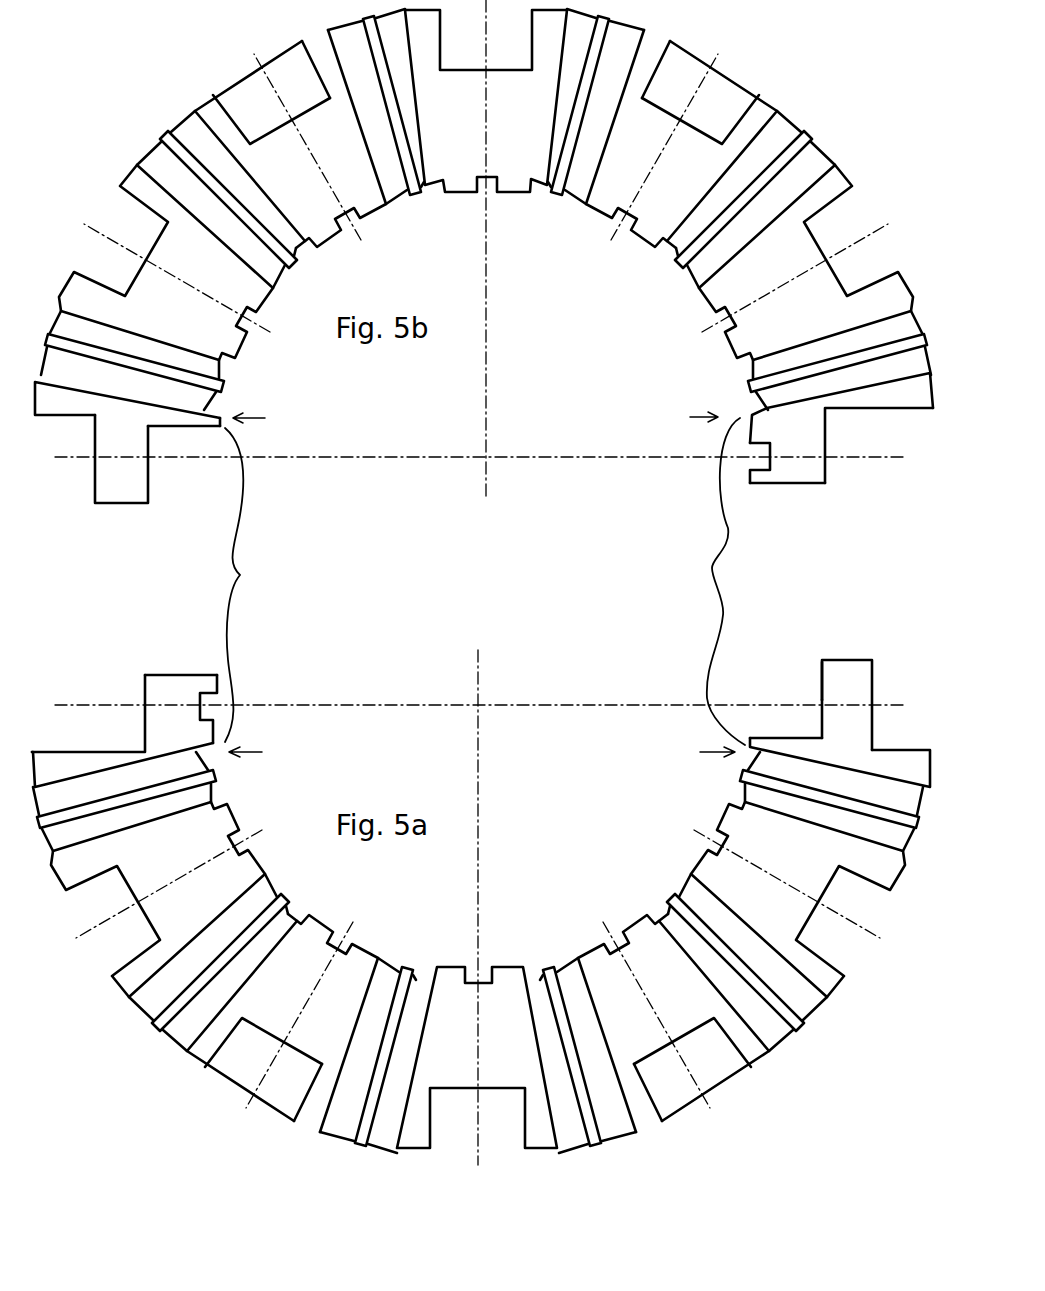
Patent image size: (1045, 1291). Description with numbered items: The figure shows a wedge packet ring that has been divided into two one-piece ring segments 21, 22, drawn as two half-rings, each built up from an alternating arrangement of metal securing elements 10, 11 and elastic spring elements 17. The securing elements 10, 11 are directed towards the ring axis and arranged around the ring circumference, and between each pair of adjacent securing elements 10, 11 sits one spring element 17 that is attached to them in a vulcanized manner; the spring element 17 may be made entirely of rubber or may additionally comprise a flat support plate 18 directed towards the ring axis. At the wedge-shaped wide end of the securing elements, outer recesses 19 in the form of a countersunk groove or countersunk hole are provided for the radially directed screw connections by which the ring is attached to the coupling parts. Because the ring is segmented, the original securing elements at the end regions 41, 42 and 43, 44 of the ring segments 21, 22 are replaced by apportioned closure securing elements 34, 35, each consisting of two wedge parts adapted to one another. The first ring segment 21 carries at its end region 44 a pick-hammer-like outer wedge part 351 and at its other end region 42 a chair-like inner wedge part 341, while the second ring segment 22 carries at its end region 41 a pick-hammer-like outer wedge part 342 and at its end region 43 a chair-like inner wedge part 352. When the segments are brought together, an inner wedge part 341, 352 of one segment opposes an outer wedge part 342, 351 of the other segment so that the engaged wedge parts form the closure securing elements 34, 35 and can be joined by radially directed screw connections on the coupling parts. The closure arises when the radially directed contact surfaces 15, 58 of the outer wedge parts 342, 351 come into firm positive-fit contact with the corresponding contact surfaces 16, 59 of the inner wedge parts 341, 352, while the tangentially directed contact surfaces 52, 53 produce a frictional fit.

In FIG. 5B, the securing element 10 is at (519, 197).
In FIG. 5A, the securing element 10 is at (541, 1150).
In FIG. 5B, the securing element 11 is at (758, 92).
In FIG. 5A, the securing element 11 is at (762, 1056).
In FIG. 5B, the contact surface 15 is at (116, 506).
In FIG. 5A, the contact surface 15 is at (848, 656).
In FIG. 5B, the contact surface 16 is at (848, 412).
In FIG. 5A, the contact surface 16 is at (110, 735).
In FIG. 5B, the elastic spring element 17 is at (822, 163).
In FIG. 5A, the elastic spring element 17 is at (227, 770).
In FIG. 5B, the flat support plate 18 is at (810, 138).
In FIG. 5B, the outer recess 19 is at (878, 272).
In FIG. 5A, the first ring segment 21 is at (490, 1059).
In FIG. 5B, the second ring segment 22 is at (638, 135).
In FIG. 5B, the closure securing element 34 is at (242, 576).
In FIG. 5B, the closure securing element 35 is at (710, 568).
In FIG. 5B, the end region 41 is at (265, 423).
In FIG. 5A, the end region 42 is at (269, 746).
In FIG. 5B, the end region 43 is at (682, 421).
In FIG. 5A, the end region 44 is at (690, 758).
In FIG. 5B, the contact surface 52 is at (833, 465).
In FIG. 5A, the contact surface 52 is at (127, 698).
In FIG. 5B, the contact surface 53 is at (139, 471).
In FIG. 5A, the contact surface 53 is at (830, 692).
In FIG. 5B, the contact surface 58 is at (216, 430).
In FIG. 5A, the contact surface 58 is at (776, 737).
In FIG. 5B, the contact surface 59 is at (766, 490).
In FIG. 5A, the contact surface 59 is at (212, 673).
In FIG. 5A, the inner wedge part 341 is at (176, 672).
In FIG. 5B, the outer wedge part 342 is at (178, 430).
In FIG. 5A, the outer wedge part 351 is at (821, 678).
In FIG. 5B, the inner wedge part 352 is at (808, 488).